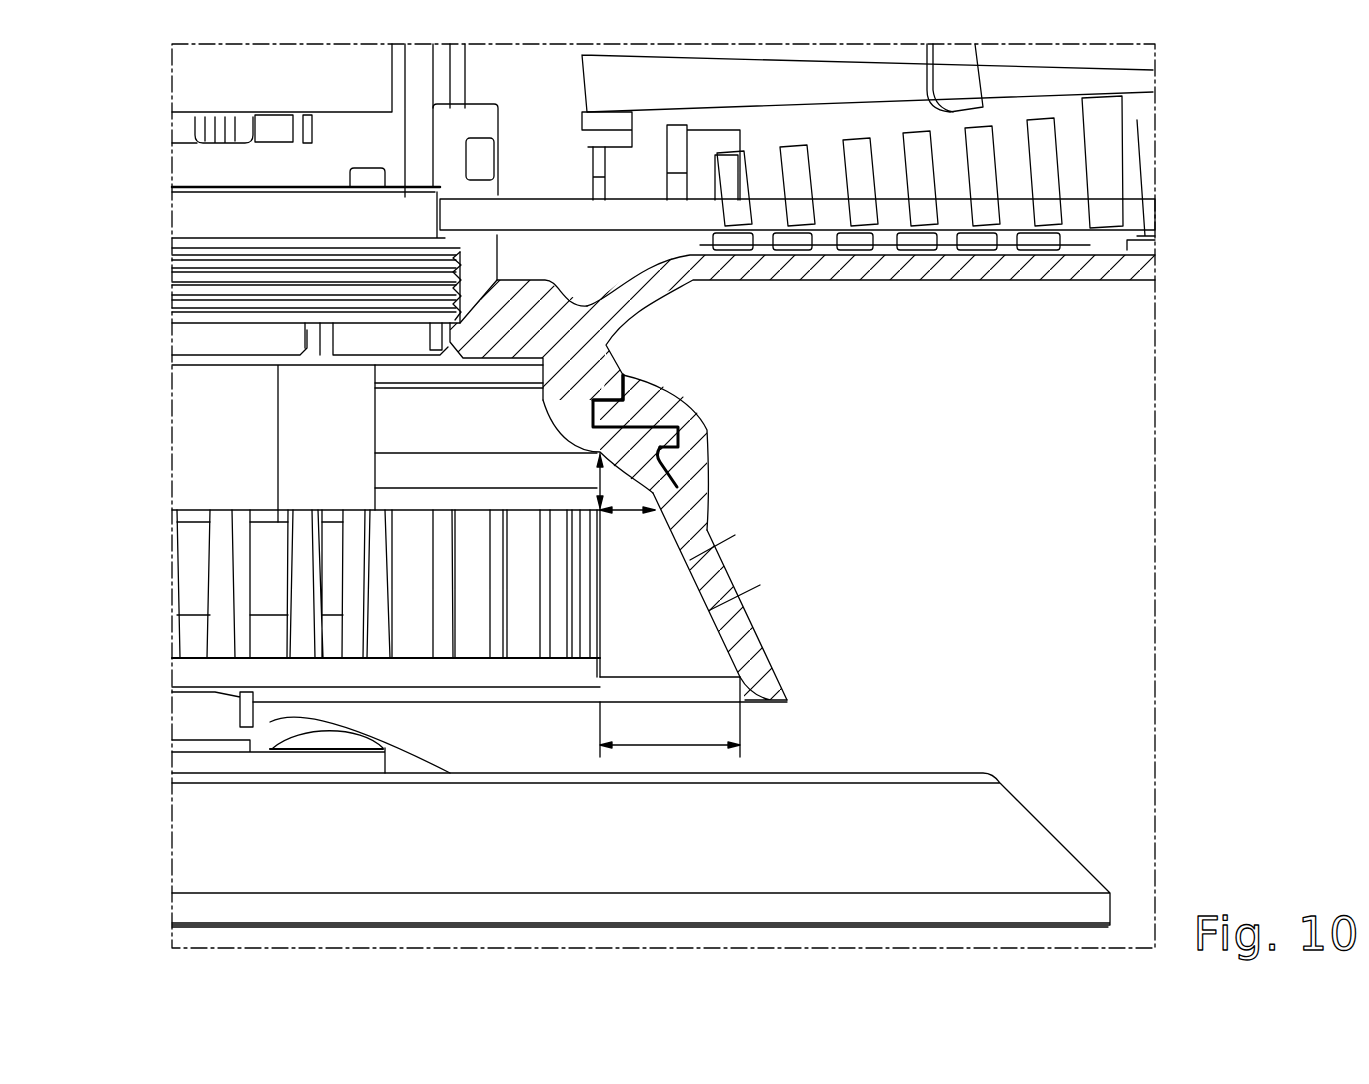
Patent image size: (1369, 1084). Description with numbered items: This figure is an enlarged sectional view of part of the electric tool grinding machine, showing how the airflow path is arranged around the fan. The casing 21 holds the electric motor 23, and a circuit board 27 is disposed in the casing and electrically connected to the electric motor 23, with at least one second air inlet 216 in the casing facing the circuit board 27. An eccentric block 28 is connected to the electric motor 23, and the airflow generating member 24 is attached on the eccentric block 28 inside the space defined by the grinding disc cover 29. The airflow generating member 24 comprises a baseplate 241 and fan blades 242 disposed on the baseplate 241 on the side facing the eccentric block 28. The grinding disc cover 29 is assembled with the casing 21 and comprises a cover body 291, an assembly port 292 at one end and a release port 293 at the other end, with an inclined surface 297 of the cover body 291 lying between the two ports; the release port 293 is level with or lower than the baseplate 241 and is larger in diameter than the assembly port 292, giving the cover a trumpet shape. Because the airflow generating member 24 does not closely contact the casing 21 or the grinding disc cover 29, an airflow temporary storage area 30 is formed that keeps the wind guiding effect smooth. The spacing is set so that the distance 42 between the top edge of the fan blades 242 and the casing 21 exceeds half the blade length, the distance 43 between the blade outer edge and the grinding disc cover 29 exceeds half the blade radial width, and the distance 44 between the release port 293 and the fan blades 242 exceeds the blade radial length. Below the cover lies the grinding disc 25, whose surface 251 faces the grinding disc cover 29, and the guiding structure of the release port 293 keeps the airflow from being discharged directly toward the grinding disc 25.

The casing 21 is at (972, 273).
The second air inlet 216 is at (1040, 243).
The electric motor 23 is at (185, 93).
The airflow generating member 24 is at (417, 606).
The baseplate 241 is at (195, 670).
The fan blades 242 is at (220, 573).
The grinding disc 25 is at (200, 868).
The surface 251 is at (205, 743).
The circuit board 27 is at (870, 93).
The eccentric block 28 is at (190, 458).
The grinding disc cover 29 is at (745, 509).
The cover body 291 is at (752, 630).
The assembly port 292 is at (601, 404).
The release port 293 is at (770, 682).
The inclined surface 297 is at (720, 575).
The airflow temporary storage area 30 is at (383, 418).
The distance between top edge of fan blades and casing 42 is at (630, 403).
The distance between outer edge of fan blades and grinding disc cover 43 is at (672, 475).
The distance between release port and fan blades 44 is at (670, 729).